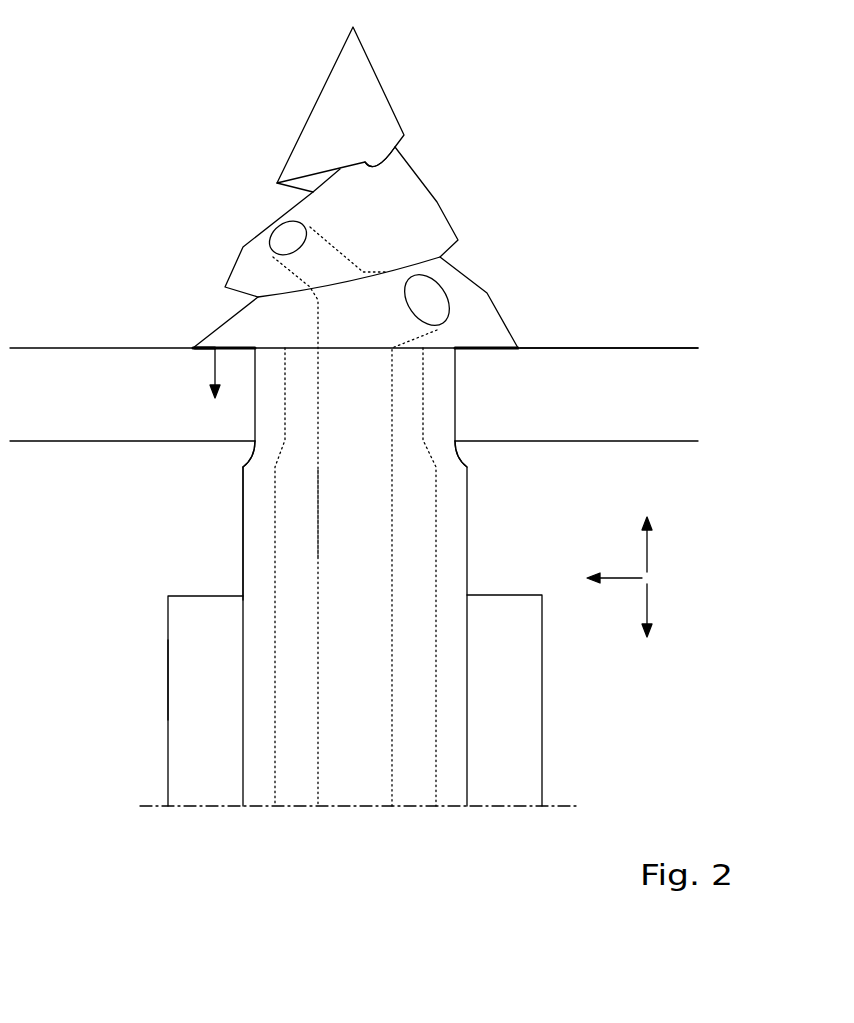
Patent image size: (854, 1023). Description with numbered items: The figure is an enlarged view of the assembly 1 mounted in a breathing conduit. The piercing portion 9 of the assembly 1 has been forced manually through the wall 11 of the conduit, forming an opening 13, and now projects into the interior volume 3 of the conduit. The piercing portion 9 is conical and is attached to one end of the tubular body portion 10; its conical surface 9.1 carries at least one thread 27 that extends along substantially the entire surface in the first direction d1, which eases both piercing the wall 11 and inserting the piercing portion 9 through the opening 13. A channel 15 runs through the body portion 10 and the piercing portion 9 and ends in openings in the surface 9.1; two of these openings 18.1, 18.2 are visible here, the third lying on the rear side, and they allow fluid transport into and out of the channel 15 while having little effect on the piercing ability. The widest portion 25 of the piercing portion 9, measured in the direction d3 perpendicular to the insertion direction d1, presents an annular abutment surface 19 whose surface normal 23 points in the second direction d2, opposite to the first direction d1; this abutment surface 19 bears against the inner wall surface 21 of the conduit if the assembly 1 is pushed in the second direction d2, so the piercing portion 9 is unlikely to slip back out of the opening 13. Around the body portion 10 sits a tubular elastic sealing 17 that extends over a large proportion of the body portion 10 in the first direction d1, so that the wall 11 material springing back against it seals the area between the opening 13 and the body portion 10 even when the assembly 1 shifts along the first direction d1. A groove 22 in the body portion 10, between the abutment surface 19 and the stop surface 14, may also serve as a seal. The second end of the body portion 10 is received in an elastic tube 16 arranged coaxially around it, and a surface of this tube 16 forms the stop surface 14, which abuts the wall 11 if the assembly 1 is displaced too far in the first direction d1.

The assembly 1 is at (155, 50).
The interior volume 3 is at (604, 101).
The piercing portion 9 is at (327, 112).
The surface 9.1 is at (413, 228).
The body portion 10 is at (298, 748).
The wall 11 is at (63, 385).
The opening 13 is at (455, 442).
The stop surface 14 is at (205, 597).
The channel 15 is at (340, 517).
The tube 16 is at (205, 675).
The sealing 17 is at (257, 483).
The opening 18.1 is at (287, 238).
The opening 18.2 is at (430, 295).
The abutment surface 19 is at (493, 347).
The inner wall surface 21 is at (612, 347).
The groove 22 is at (228, 455).
The surface normal 23 is at (213, 370).
The widest portion 25 is at (200, 347).
The thread 27 is at (397, 160).
The first direction d1 is at (647, 547).
The second direction d2 is at (647, 597).
The direction d3 is at (623, 575).